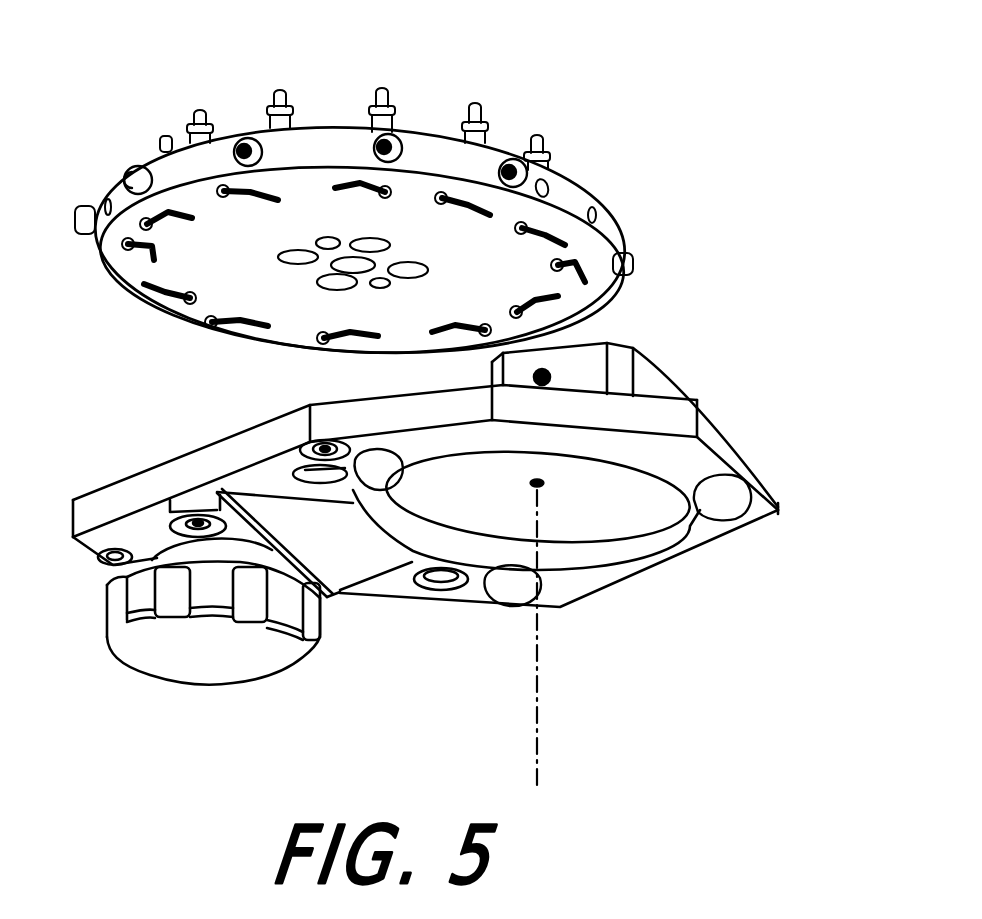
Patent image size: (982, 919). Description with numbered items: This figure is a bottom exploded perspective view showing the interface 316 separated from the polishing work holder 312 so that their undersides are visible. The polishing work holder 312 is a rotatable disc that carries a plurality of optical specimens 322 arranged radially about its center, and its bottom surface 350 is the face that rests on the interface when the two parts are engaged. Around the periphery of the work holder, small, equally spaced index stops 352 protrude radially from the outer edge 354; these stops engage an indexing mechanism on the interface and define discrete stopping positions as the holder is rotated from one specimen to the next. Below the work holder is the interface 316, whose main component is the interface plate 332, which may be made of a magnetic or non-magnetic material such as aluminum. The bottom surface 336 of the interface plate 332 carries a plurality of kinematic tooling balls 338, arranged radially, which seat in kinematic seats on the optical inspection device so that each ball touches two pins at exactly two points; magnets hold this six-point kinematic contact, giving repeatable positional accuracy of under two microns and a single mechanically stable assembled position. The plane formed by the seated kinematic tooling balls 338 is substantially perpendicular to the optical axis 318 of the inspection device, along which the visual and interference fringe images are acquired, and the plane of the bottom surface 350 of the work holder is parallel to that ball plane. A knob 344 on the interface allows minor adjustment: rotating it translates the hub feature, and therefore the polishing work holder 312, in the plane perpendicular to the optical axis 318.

The polishing work holder 312 is at (328, 128).
The interface 316 is at (770, 484).
The optical axis 318 is at (533, 699).
The optical specimens 322 is at (497, 200).
The interface plate 332 is at (747, 437).
The bottom surface 336 is at (565, 583).
The kinematic tooling balls 338 is at (360, 470).
The knob 344 is at (207, 647).
The bottom surface 350 is at (222, 276).
The index stops 352 is at (130, 166).
The outer edge 354 is at (432, 157).